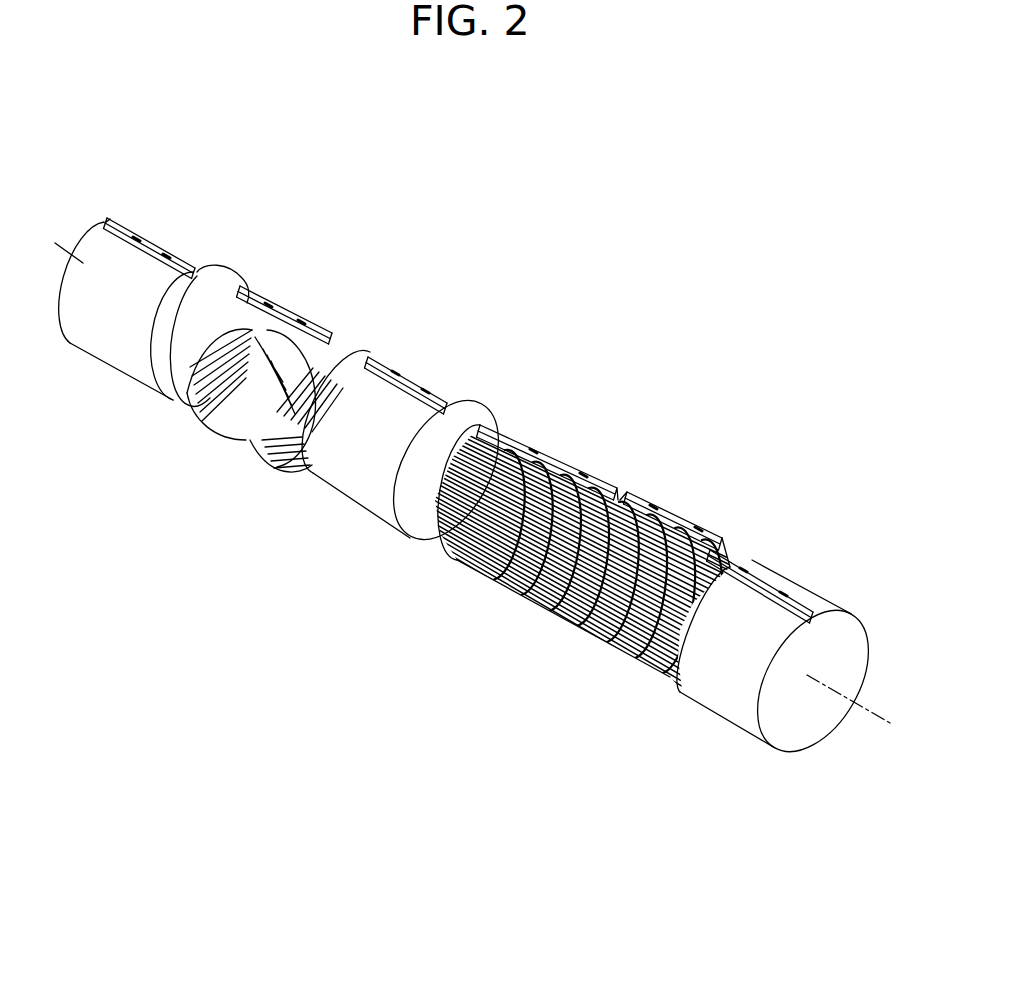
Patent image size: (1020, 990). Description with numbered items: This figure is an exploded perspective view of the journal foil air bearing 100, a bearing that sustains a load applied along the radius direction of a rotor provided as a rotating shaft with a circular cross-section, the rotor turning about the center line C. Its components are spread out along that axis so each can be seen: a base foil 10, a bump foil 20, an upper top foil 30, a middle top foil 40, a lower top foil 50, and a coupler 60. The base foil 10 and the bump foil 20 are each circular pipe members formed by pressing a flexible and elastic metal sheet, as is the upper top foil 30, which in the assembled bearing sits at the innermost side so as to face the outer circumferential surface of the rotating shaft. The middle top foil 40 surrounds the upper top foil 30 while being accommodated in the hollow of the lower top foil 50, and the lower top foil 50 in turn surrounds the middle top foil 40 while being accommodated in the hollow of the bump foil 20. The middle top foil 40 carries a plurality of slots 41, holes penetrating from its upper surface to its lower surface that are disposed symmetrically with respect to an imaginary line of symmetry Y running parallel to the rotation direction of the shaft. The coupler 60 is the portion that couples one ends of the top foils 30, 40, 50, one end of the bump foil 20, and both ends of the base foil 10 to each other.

The journal foil air bearing 100 is at (138, 152).
The base foil 10 is at (714, 743).
The bump foil 20 is at (474, 597).
The upper top foil 30 is at (122, 390).
The middle top foil 40 is at (215, 442).
The slots 41 is at (253, 445).
The lower top foil 50 is at (349, 520).
The coupler 60 is at (168, 248).
The imaginary line of symmetry Y is at (250, 345).
The center line C is at (873, 717).